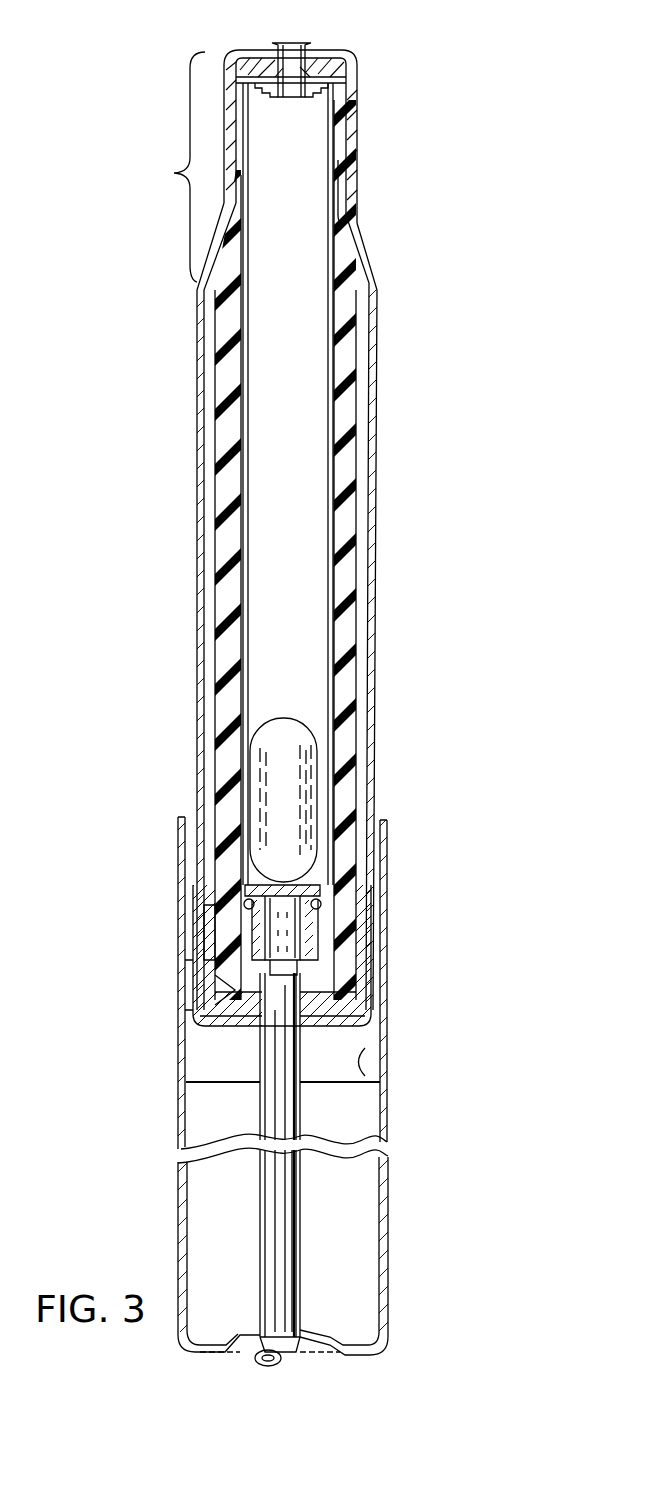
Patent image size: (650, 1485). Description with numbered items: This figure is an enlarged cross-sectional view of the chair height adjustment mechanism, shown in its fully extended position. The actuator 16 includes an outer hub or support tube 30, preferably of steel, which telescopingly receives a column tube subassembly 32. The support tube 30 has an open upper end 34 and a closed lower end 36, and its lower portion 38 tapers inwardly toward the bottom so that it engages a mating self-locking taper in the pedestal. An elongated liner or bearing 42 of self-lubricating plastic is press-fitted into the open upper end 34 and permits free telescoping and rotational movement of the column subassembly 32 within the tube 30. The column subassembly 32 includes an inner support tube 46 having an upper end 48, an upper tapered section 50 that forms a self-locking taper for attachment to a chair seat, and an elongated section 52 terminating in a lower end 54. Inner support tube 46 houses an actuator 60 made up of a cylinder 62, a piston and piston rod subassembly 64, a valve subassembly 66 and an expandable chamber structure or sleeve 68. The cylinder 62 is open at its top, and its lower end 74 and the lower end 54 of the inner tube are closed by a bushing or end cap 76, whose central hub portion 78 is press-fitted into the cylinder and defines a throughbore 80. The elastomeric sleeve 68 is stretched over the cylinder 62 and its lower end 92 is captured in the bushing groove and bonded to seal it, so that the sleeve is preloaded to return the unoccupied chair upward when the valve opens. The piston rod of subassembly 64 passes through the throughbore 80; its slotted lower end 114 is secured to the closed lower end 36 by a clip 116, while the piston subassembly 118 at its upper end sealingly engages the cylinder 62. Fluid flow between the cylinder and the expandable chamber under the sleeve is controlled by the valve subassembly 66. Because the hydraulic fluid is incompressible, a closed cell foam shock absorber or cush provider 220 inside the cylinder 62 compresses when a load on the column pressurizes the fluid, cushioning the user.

The actuator 16 is at (384, 216).
The outer hub or support tube 30 is at (155, 1172).
The column tube subassembly 32 is at (398, 392).
The open upper end 34 is at (388, 818).
The closed lower end 36 is at (355, 1352).
The lower portion 38 is at (178, 1237).
The liner or bearing 42 is at (388, 1078).
The column or inner support tube 46 is at (196, 536).
The upper end 48 is at (234, 52).
The upper tapered section 50 is at (169, 167).
The elongated section 52 is at (378, 530).
The lower end 54 is at (386, 990).
The actuator 60 is at (345, 118).
The cylinder 62 is at (243, 440).
The piston and piston rod subassembly 64 is at (228, 1105).
The valve subassembly 66 is at (320, 36).
The expandable chamber structure or sleeve 68 is at (212, 718).
The lower end 74 is at (385, 940).
The bushing or end cap 76 is at (178, 982).
The central hub portion 78 is at (182, 1018).
The throughbore 80 is at (268, 1325).
The lower end of sleeve 92 is at (209, 925).
The slotted lower end 114 is at (305, 1320).
The clip 116 is at (312, 1345).
The piston subassembly 118 is at (388, 882).
The shock absorber or cush provider 220 is at (305, 750).